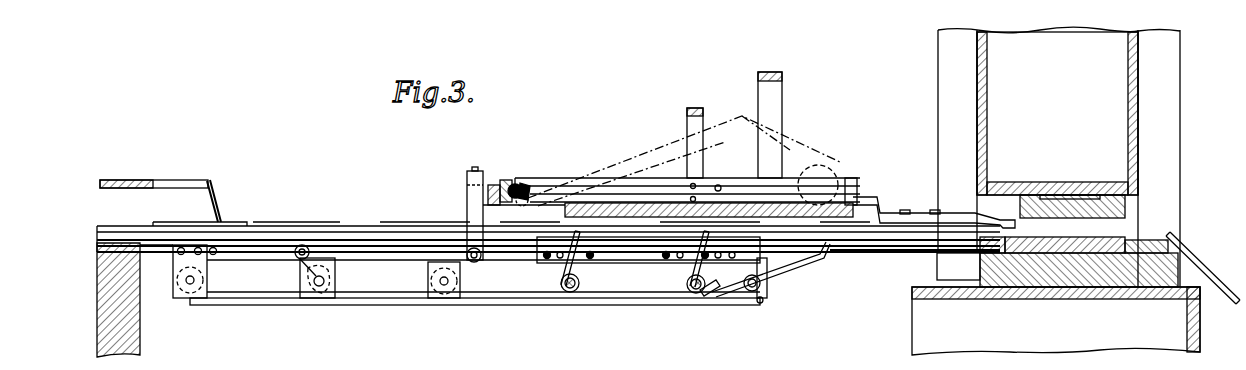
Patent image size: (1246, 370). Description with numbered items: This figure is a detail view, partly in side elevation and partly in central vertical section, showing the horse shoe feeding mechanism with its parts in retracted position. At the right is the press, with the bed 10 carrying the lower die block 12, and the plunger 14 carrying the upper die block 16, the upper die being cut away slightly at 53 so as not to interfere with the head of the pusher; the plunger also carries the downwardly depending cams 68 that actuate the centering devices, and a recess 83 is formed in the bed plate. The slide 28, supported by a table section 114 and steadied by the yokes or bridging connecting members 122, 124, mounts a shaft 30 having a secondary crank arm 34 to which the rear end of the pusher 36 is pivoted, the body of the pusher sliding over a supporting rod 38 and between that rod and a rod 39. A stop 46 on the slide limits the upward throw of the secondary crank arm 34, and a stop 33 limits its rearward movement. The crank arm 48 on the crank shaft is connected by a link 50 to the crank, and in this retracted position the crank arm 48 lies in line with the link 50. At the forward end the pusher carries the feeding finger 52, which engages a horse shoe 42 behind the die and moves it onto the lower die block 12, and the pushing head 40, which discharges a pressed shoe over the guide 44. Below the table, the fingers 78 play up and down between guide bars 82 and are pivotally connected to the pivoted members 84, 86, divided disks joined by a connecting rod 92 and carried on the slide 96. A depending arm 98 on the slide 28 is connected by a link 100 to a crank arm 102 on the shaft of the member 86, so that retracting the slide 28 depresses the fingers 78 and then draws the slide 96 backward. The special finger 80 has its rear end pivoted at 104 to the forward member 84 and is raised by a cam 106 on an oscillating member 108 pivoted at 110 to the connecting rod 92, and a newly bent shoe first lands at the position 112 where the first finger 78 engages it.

The bed of the press 10 is at (1100, 275).
The lower die block 12 is at (1075, 245).
The plunger 14 is at (1057, 113).
The upper die block 16 is at (1128, 208).
The slide 28 is at (560, 180).
The shaft 30 is at (512, 186).
The stop 33 is at (500, 206).
The secondary crank arm 34 is at (522, 182).
The pusher 36 is at (608, 190).
The supporting rod 38 is at (690, 190).
The rod 39 is at (718, 186).
The pushing finger or head 40 is at (1002, 240).
The horse shoe 42 is at (968, 213).
The guide 44 is at (1190, 240).
The stop 46 is at (503, 182).
The crank arm 48 is at (803, 150).
The link 50 is at (666, 140).
The feeding finger 52 is at (925, 226).
The cut away portion of upper die 53 is at (1006, 182).
The cams 68 is at (1070, 195).
The fingers 78 is at (590, 240).
The special finger 80 is at (798, 262).
The guide bars 82 is at (560, 246).
The recess 83 is at (962, 272).
The pivoted members 84 is at (183, 298).
The pivoted member 86 is at (329, 300).
The connecting rod 92 is at (383, 305).
The slide 96 is at (252, 254).
The depending arm 98 is at (470, 190).
The link 100 is at (362, 253).
The crank arm 102 is at (304, 262).
The pivot 104 is at (712, 290).
The cam 106 is at (740, 290).
The oscillating member 108 is at (768, 285).
The pivot 110 is at (760, 304).
The shoe position 112 is at (228, 222).
The table section 114 is at (850, 205).
The yoke or bridging connecting member 122 is at (695, 106).
The yoke or bridging connecting member 124 is at (778, 70).